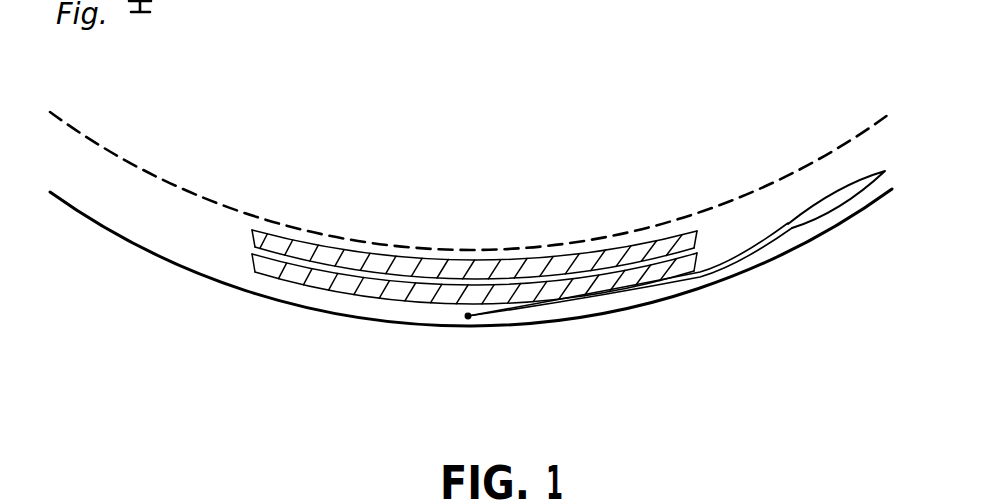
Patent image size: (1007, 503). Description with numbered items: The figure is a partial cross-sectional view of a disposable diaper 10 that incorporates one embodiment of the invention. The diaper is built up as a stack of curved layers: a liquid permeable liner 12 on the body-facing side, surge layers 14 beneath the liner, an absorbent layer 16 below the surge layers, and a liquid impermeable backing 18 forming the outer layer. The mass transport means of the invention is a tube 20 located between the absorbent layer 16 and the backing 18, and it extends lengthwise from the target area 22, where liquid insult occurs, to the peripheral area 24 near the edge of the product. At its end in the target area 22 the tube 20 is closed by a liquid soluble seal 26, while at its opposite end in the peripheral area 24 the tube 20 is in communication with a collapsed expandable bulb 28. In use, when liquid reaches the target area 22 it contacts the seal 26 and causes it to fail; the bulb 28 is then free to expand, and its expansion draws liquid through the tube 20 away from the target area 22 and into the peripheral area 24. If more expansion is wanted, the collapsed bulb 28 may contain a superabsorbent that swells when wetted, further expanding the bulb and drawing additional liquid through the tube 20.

The disposable diaper 10 is at (620, 92).
The liquid permeable liner 12 is at (436, 250).
The surge layers 14 is at (318, 248).
The absorbent layer 16 is at (323, 283).
The liquid impermeable backing 18 is at (233, 287).
The tube 20 is at (547, 308).
The target area 22 is at (560, 225).
The peripheral area 24 is at (748, 180).
The liquid soluble seal 26 is at (468, 316).
The collapsed expandable bulb 28 is at (836, 203).